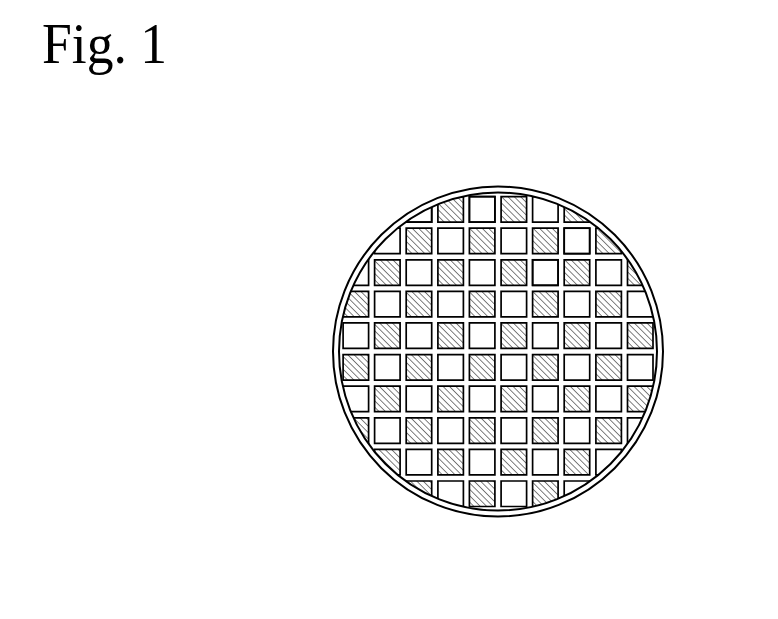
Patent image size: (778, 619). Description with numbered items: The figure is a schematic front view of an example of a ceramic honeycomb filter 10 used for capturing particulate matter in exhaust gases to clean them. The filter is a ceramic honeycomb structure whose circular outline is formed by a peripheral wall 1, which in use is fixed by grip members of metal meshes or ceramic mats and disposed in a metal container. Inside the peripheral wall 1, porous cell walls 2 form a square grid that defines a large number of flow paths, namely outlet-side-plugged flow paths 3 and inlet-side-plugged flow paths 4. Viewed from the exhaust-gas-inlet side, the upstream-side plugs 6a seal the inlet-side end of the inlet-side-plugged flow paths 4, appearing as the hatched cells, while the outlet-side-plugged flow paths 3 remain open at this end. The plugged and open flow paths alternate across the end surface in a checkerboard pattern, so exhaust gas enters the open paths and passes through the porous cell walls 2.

The ceramic honeycomb filter 10 is at (338, 172).
The peripheral wall 1 is at (417, 217).
The porous cell walls 2 is at (482, 223).
The outlet-side-plugged flow paths 3 is at (550, 273).
The inlet-side-plugged flow paths 4 is at (565, 242).
The upstream-side plugs 6a is at (549, 240).